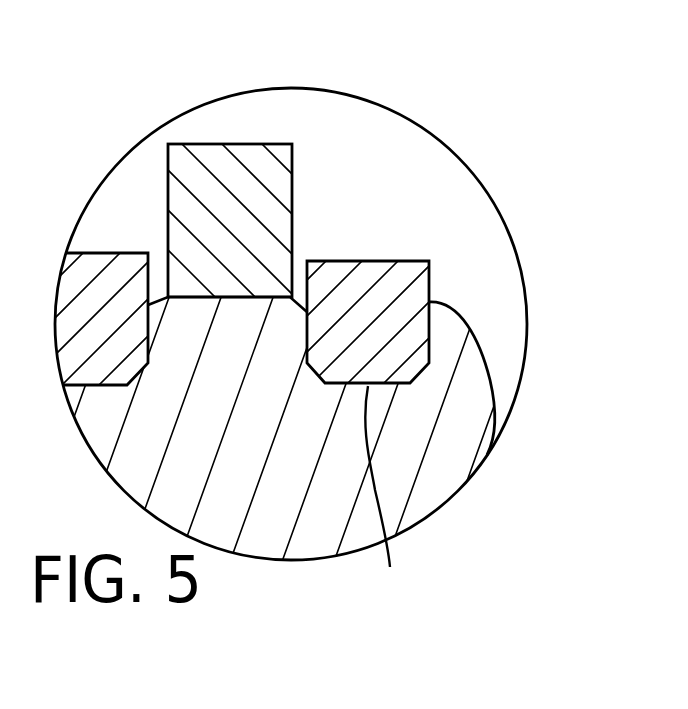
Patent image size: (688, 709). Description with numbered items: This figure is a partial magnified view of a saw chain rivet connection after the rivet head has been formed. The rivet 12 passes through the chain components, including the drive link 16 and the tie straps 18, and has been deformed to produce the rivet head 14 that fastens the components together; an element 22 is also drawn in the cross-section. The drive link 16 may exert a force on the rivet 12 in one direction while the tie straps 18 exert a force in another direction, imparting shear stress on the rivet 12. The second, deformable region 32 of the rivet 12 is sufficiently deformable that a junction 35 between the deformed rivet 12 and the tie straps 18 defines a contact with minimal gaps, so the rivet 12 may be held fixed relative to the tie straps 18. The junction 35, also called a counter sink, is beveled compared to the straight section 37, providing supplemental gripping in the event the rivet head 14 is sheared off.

The rivet 12 is at (305, 578).
The rivet head 14 is at (493, 415).
The drive link 16 is at (257, 170).
The tie strap 18 is at (368, 261).
The third block 22 is at (233, 297).
The deformable region 32 is at (413, 497).
The junction 35 is at (423, 375).
The straight section 37 is at (389, 498).